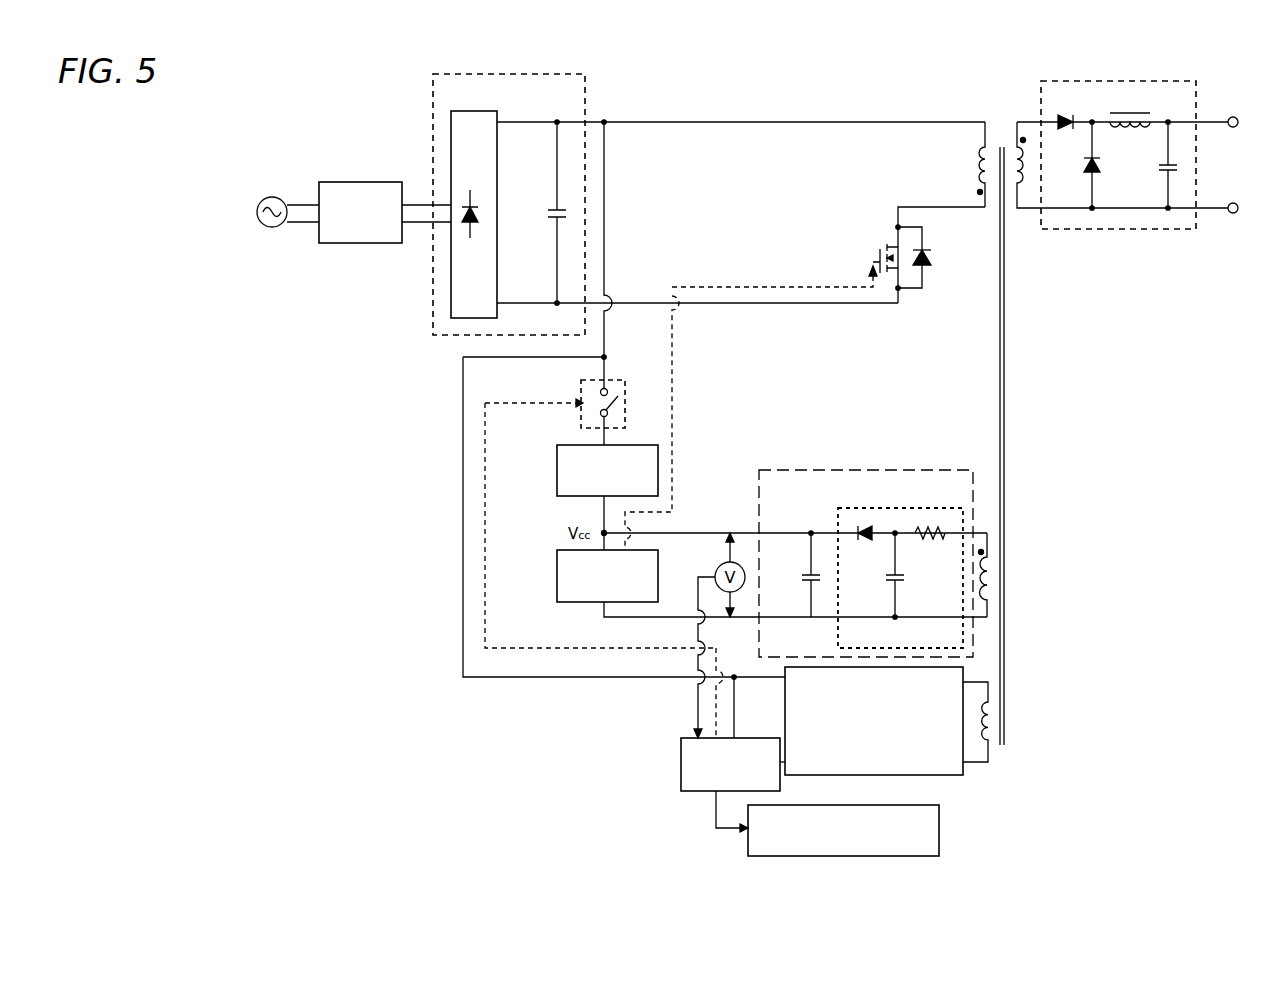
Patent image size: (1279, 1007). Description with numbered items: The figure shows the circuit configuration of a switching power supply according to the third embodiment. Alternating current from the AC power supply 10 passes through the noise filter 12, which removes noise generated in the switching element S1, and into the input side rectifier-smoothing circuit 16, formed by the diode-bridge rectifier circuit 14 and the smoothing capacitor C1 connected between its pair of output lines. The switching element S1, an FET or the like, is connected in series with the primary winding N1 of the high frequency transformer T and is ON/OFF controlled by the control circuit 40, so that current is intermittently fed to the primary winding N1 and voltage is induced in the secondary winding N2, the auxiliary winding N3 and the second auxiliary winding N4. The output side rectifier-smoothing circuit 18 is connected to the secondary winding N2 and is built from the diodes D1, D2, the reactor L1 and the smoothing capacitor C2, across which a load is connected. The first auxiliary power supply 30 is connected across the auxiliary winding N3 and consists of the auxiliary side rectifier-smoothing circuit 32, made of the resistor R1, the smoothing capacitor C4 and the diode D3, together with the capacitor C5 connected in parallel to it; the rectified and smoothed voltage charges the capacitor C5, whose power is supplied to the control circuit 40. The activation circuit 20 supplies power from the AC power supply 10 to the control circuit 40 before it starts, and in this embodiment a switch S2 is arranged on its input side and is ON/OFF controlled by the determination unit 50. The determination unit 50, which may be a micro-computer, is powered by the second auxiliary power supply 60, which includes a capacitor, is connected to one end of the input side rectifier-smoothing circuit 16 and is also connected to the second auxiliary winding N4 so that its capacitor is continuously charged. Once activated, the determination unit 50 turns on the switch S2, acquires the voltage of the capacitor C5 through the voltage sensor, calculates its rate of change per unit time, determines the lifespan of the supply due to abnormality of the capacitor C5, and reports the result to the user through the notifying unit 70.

The AC power supply 10 is at (272, 197).
The noise filter 12 is at (362, 182).
The rectifier circuit 14 is at (475, 111).
The input side rectifier-smoothing circuit 16 is at (545, 74).
The output side rectifier-smoothing circuit 18 is at (1160, 230).
The activation circuit 20 is at (557, 471).
The first auxiliary power supply 30 is at (880, 470).
The auxiliary side rectifier-smoothing circuit 32 is at (838, 641).
The control circuit 40 is at (557, 575).
The determination unit 50 is at (681, 762).
The second auxiliary power supply 60 is at (920, 776).
The notifying unit 70 is at (790, 805).
The smoothing capacitor C1 is at (549, 212).
The smoothing capacitor C2 is at (1160, 171).
The smoothing capacitor C4 is at (903, 579).
The capacitor C5 is at (803, 579).
The diode D1 is at (1068, 113).
The diode D2 is at (1085, 174).
The diode D3 is at (862, 525).
The reactor L1 is at (1130, 133).
The resistor R1 is at (924, 525).
The switching element S1 is at (925, 268).
The switch S2 is at (620, 380).
The high frequency transformer T is at (1030, 104).
The primary winding N1 is at (976, 166).
The secondary winding N2 is at (1013, 138).
The auxiliary winding N3 is at (993, 548).
The second auxiliary winding N4 is at (1000, 746).